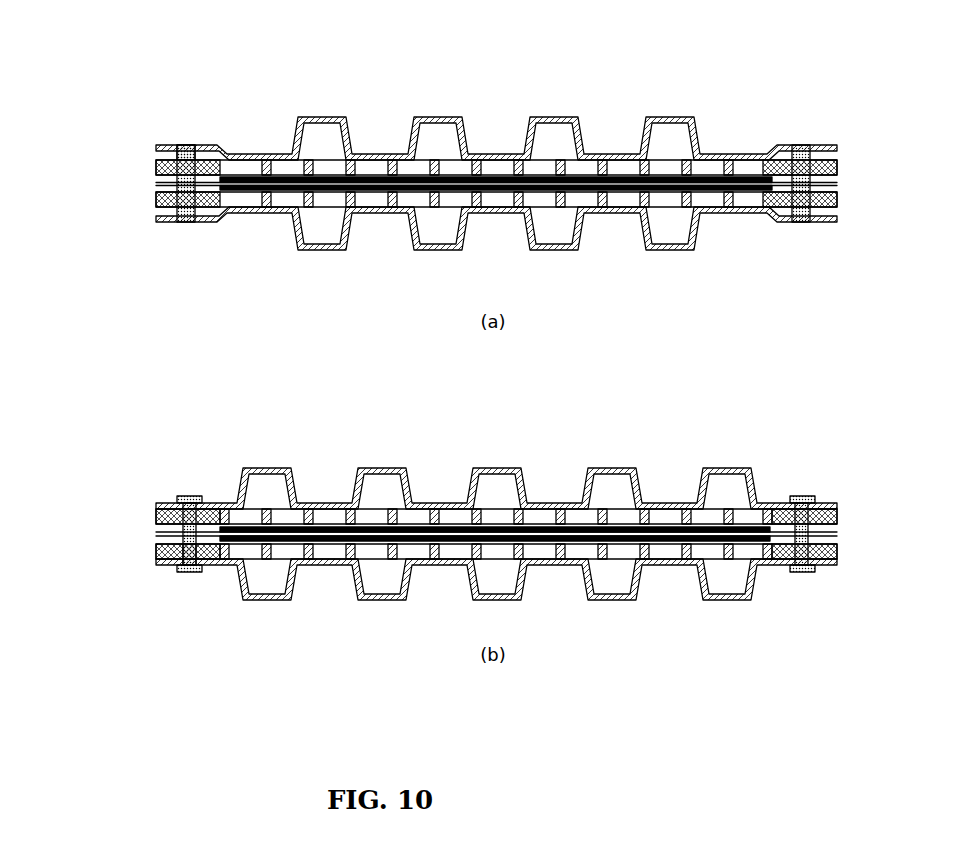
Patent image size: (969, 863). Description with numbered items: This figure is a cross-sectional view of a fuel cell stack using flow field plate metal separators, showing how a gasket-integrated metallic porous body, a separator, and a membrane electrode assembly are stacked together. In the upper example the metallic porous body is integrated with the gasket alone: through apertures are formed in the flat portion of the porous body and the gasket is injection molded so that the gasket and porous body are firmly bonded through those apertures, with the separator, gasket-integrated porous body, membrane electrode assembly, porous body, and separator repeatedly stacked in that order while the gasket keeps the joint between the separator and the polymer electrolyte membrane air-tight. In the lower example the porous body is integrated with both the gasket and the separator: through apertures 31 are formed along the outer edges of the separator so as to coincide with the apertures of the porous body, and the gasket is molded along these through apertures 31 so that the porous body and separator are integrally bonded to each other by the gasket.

The through aperture 31 is at (186, 497).